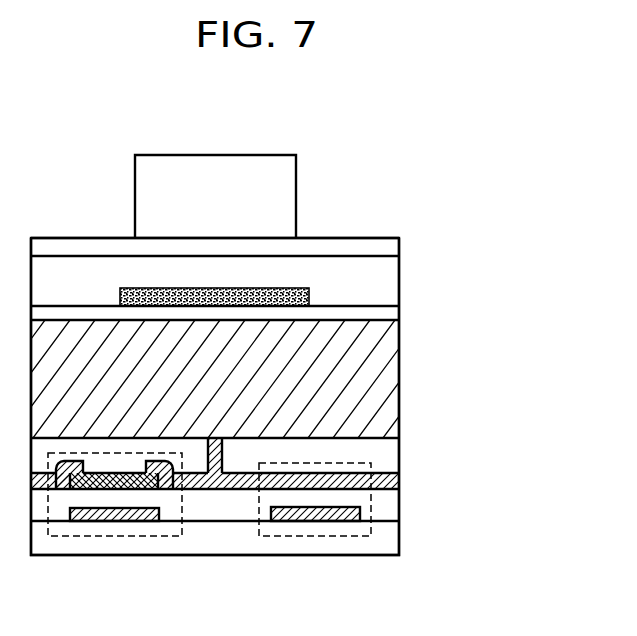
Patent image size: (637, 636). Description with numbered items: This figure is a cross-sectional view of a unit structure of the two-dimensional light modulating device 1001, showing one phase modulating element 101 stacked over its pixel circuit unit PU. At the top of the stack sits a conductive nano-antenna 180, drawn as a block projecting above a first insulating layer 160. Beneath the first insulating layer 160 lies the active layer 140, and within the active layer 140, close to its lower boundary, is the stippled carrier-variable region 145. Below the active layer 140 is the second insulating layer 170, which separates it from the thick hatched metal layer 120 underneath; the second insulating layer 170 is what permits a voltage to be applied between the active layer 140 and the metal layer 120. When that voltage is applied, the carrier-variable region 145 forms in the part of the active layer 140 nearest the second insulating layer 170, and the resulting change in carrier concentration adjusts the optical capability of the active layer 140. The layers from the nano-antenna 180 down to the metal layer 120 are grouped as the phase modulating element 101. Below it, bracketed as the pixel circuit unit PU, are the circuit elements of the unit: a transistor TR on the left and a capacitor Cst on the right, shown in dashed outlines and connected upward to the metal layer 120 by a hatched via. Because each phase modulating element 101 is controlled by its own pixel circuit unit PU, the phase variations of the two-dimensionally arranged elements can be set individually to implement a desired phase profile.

The 2D light modulating device 1001 is at (505, 146).
The conductive nano-antenna 180 is at (282, 194).
The first insulating layer 160 is at (391, 244).
The carrier-variable region 145 is at (307, 287).
The active layer 140 is at (387, 288).
The second insulating layer 170 is at (382, 313).
The metal layer 120 is at (385, 381).
The phase modulating element 101 is at (483, 167).
The pixel circuit unit PU is at (483, 438).
The transistor TR is at (115, 536).
The capacitor Cst is at (315, 536).